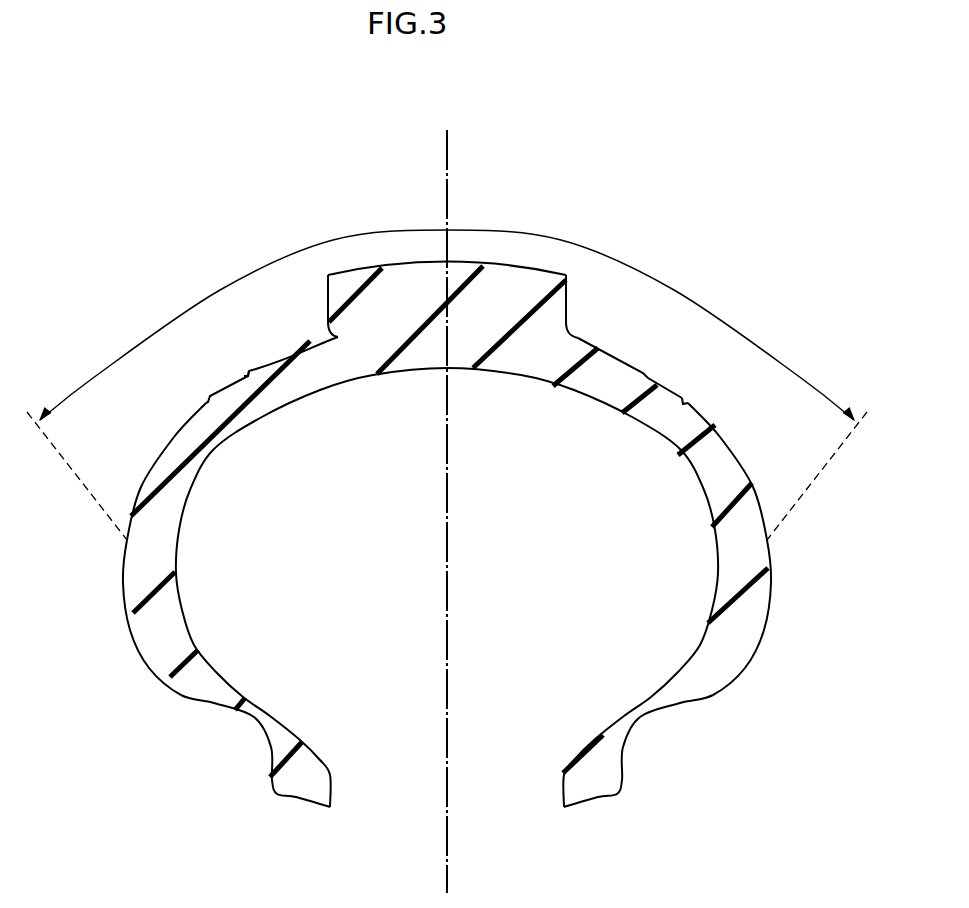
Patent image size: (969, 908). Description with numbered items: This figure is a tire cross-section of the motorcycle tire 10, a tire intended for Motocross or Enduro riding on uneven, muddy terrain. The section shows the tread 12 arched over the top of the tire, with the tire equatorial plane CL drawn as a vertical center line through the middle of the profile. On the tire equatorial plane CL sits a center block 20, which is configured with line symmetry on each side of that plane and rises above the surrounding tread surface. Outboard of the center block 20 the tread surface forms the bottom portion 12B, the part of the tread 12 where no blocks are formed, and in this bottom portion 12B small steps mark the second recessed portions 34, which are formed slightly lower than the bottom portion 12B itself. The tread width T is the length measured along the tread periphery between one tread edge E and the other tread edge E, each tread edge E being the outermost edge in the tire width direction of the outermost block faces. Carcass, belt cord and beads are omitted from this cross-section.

The motorcycle tire 10 is at (455, 455).
The tread 12 is at (484, 312).
The bottom portion 12B is at (625, 360).
The center block 20 is at (567, 301).
The second recessed portion 34 is at (687, 403).
The tread width T is at (597, 251).
The tire equatorial plane CL is at (447, 146).
The tread edge E is at (72, 470).